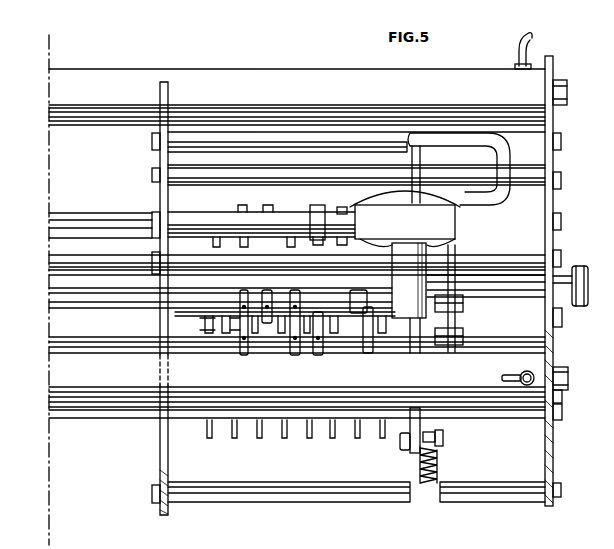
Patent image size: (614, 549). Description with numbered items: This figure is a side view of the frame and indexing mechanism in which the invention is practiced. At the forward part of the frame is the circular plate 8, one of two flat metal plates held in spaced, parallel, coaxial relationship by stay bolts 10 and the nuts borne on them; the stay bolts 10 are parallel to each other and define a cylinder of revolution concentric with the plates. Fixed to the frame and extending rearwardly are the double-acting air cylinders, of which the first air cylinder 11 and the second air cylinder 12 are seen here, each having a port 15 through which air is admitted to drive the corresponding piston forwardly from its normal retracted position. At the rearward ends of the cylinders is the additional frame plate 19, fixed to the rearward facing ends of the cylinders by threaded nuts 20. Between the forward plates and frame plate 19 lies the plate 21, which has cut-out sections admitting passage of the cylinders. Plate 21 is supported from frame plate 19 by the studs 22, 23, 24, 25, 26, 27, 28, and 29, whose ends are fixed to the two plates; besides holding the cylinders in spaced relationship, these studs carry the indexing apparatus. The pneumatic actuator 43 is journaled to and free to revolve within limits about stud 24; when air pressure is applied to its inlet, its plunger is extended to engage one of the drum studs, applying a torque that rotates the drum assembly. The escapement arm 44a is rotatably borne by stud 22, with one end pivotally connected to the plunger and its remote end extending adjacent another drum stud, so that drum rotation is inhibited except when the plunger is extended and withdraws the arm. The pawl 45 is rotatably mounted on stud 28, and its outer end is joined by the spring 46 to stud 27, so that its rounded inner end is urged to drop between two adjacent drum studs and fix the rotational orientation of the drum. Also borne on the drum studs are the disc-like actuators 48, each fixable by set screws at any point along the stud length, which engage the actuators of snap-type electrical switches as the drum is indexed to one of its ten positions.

The circular plate 8 is at (111, 25).
The stay bolt 10 is at (348, 20).
The first air cylinder 11 is at (226, 72).
The second air cylinder 12 is at (125, 412).
The port 15 is at (512, 52).
The frame plate 19 is at (554, 66).
The threaded nut 20 is at (566, 106).
The plate 21 is at (170, 450).
The stud 22 is at (561, 138).
The stud 23 is at (561, 178).
The stud 24 is at (561, 220).
The stud 25 is at (561, 258).
The stud 26 is at (562, 414).
The stud 27 is at (562, 396).
The stud 28 is at (561, 486).
The stud 29 is at (562, 326).
The pneumatic actuator 43 is at (386, 272).
The escapement arm 44a is at (408, 157).
The pawl 45 is at (438, 427).
The spring 46 is at (438, 464).
The disc-like actuator 48 is at (246, 356).